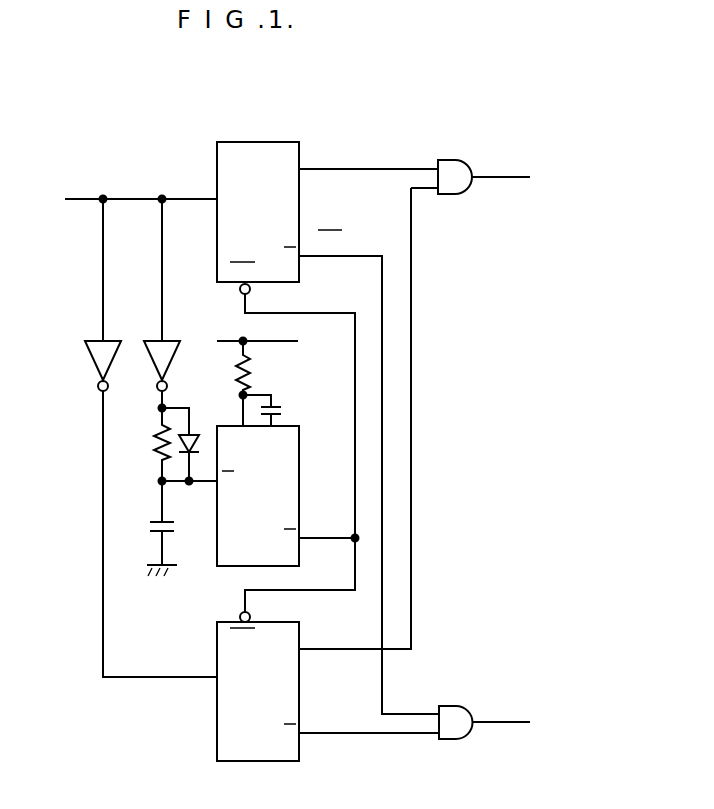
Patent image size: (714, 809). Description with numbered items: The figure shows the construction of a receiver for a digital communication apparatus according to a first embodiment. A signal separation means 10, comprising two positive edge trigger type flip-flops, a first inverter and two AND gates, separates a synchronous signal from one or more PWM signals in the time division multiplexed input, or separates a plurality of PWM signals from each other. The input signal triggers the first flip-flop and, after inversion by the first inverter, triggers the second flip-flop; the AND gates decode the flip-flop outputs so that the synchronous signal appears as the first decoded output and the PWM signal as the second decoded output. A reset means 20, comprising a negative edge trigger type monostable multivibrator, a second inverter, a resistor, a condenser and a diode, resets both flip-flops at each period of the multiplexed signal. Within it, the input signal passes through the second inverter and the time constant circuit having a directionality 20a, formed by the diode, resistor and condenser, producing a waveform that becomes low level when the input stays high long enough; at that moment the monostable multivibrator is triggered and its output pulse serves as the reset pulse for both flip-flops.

The signal separation means 10 is at (366, 142).
The reset means 20 is at (198, 565).
The time constant circuit having a directionality 20a is at (143, 458).